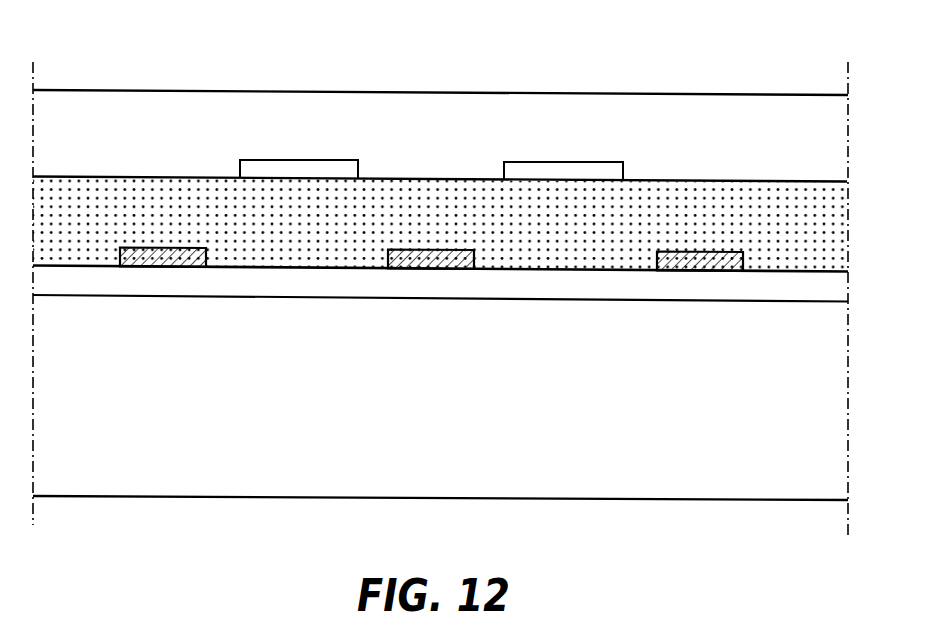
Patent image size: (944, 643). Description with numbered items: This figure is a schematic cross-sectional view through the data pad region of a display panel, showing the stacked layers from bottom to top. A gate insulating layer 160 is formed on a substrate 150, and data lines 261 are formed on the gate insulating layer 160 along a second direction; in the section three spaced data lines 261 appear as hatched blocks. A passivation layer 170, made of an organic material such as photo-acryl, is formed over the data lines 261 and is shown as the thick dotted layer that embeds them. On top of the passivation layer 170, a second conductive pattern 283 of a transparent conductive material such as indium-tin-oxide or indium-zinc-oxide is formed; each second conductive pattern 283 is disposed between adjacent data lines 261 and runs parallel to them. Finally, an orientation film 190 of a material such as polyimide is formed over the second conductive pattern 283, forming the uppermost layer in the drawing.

The substrate 150 is at (292, 460).
The gate insulating layer 160 is at (588, 287).
The passivation layer 170 is at (162, 197).
The orientation film 190 is at (430, 137).
The data lines 261 is at (167, 267).
The second conductive pattern 283 is at (301, 172).